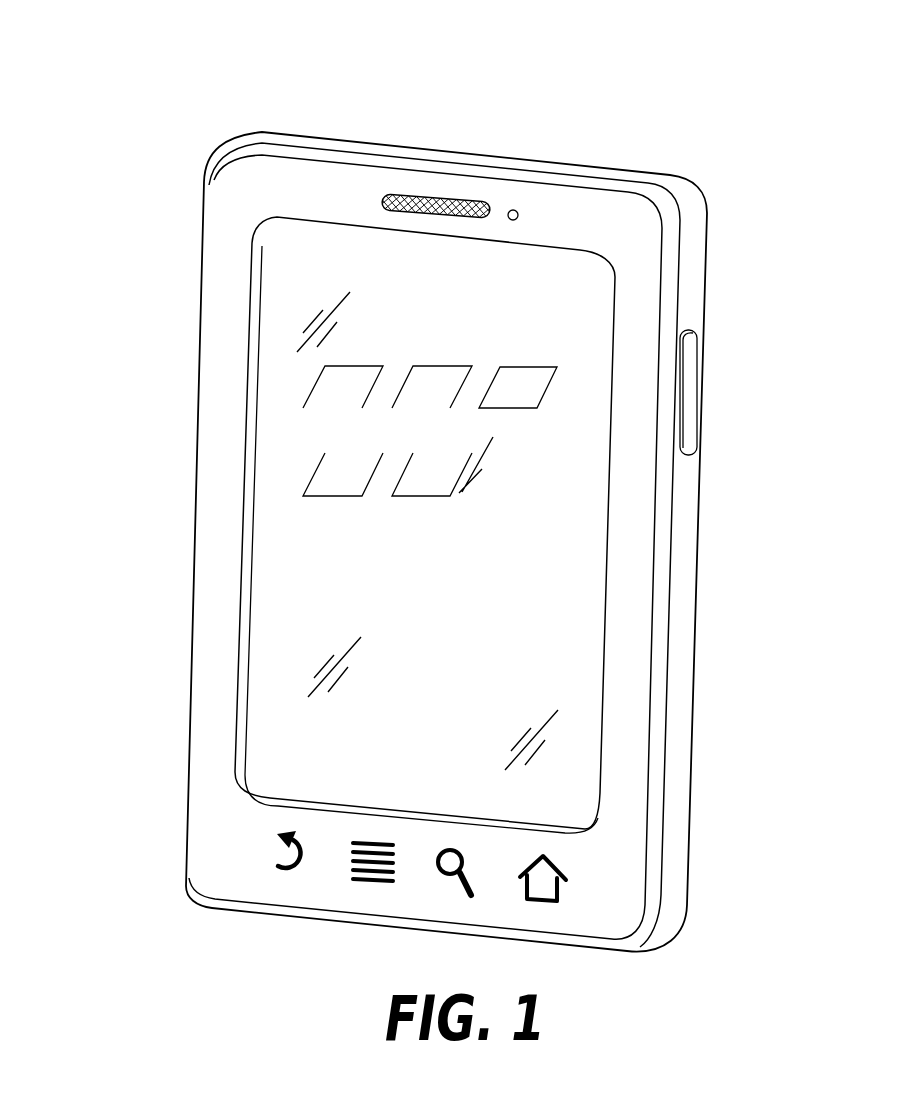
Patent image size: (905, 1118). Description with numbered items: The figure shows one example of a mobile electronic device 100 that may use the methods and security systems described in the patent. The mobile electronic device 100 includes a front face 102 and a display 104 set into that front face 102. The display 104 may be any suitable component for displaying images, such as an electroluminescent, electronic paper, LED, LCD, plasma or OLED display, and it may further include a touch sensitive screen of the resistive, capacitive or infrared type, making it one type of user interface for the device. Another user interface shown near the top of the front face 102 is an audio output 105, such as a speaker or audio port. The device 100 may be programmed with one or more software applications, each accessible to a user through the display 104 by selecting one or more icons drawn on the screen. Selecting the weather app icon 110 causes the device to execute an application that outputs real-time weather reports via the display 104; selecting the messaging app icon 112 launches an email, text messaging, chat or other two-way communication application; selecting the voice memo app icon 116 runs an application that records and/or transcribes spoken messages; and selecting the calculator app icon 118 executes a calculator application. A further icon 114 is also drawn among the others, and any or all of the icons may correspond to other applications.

The mobile electronic device 100 is at (175, 117).
The front face 102 is at (582, 214).
The display 104 is at (590, 566).
The audio output 105 is at (389, 194).
The weather app icon 110 is at (331, 394).
The messaging app icon 112 is at (419, 394).
The application icon 114 is at (518, 387).
The voice memo app icon 116 is at (343, 474).
The calculator app icon 118 is at (432, 474).